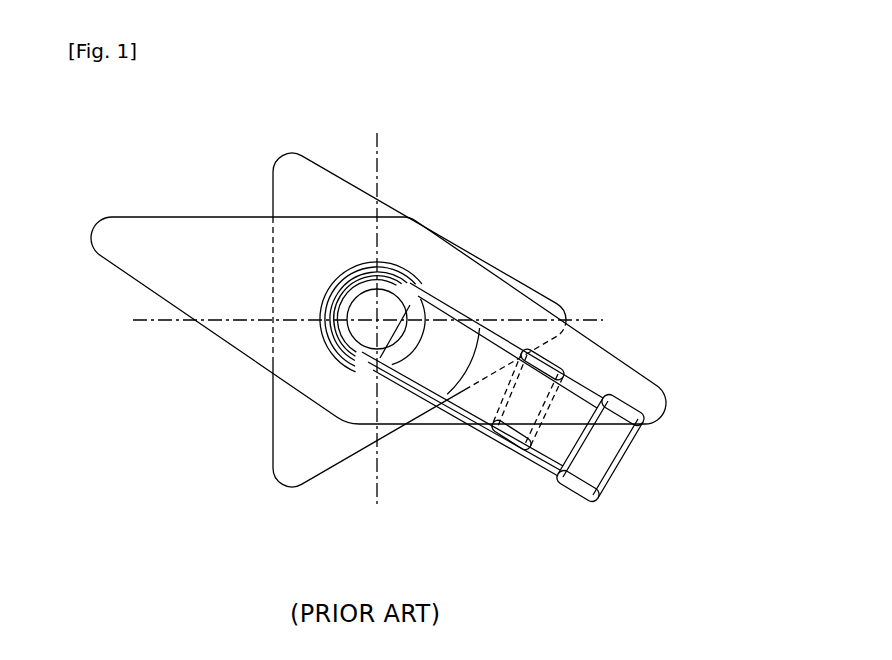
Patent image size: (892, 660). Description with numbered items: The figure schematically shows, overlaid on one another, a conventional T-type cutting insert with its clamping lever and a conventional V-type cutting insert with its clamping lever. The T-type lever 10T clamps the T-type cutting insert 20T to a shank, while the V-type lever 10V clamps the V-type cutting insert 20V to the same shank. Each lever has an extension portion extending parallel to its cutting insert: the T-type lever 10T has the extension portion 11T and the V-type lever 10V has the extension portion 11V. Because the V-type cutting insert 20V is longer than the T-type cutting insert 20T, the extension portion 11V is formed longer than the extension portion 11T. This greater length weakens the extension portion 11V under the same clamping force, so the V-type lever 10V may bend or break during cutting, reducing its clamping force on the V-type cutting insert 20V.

The T-type lever 10T is at (464, 427).
The extension portion of the T-type lever 11T is at (477, 405).
The V-type lever 10V is at (552, 486).
The extension portion of the V-type lever 11V is at (552, 453).
The T-type cutting insert 20T is at (318, 181).
The V-type cutting insert 20V is at (146, 228).